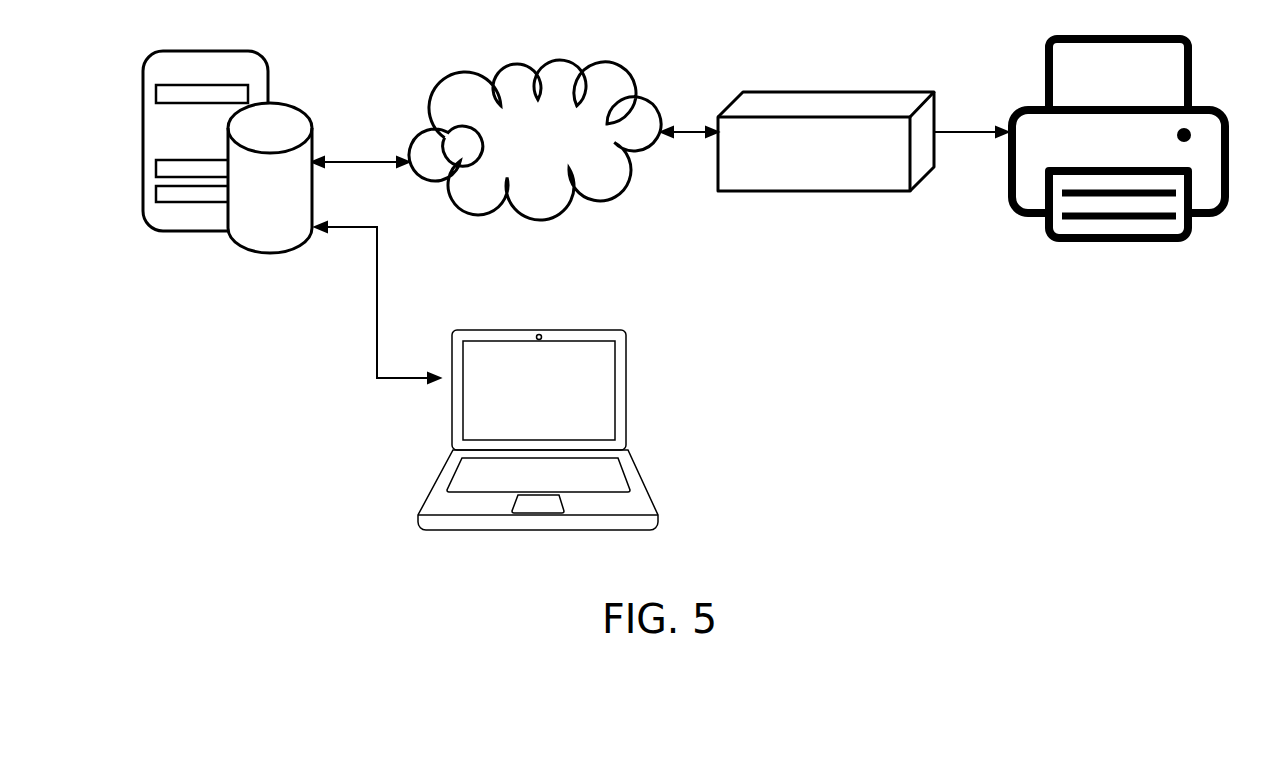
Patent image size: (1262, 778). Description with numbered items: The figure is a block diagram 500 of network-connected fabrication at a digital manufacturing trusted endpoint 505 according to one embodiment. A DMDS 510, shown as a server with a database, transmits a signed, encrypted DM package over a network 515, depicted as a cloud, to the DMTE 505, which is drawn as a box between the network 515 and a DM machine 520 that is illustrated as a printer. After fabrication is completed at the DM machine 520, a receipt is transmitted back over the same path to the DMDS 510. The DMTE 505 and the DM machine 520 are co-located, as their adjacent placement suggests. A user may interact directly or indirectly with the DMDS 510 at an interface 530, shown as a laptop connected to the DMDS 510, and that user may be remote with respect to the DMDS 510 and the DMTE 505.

The block diagram 500 is at (243, 428).
The digital manufacturing trusted endpoint 505 is at (811, 159).
The DMDS 510 is at (300, 196).
The network 515 is at (553, 162).
The DM machine 520 is at (1110, 149).
The interface 530 is at (537, 399).